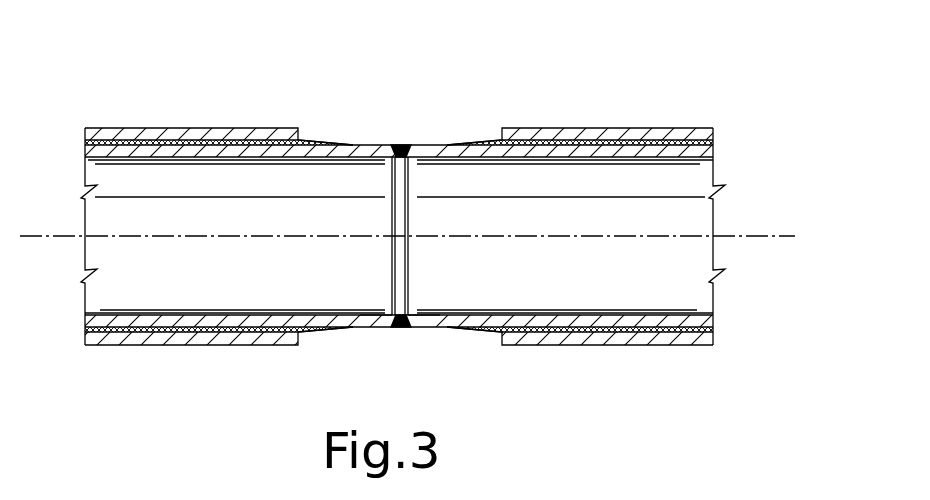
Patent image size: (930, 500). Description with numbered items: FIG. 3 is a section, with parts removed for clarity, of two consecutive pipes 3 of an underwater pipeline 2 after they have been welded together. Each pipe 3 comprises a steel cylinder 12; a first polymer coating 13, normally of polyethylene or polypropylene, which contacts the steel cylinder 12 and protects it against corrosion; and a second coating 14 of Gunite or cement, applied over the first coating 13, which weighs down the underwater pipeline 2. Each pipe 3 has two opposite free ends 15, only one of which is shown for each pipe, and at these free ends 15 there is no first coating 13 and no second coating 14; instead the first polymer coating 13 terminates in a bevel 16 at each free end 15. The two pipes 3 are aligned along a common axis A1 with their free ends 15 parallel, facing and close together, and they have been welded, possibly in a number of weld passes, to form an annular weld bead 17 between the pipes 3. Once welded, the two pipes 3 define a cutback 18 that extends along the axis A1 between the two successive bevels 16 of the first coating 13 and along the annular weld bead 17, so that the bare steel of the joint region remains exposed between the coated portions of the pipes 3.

The underwater pipeline 2 is at (193, 367).
The pipe 3 is at (120, 57).
The steel cylinder 12 is at (103, 322).
The first polymer coating 13 is at (125, 143).
The second coating 14 is at (193, 128).
The free end 15 is at (383, 349).
The bevel 16 is at (358, 133).
The annular weld bead 17 is at (400, 328).
The cutback 18 is at (402, 101).
The axis A1 is at (742, 236).